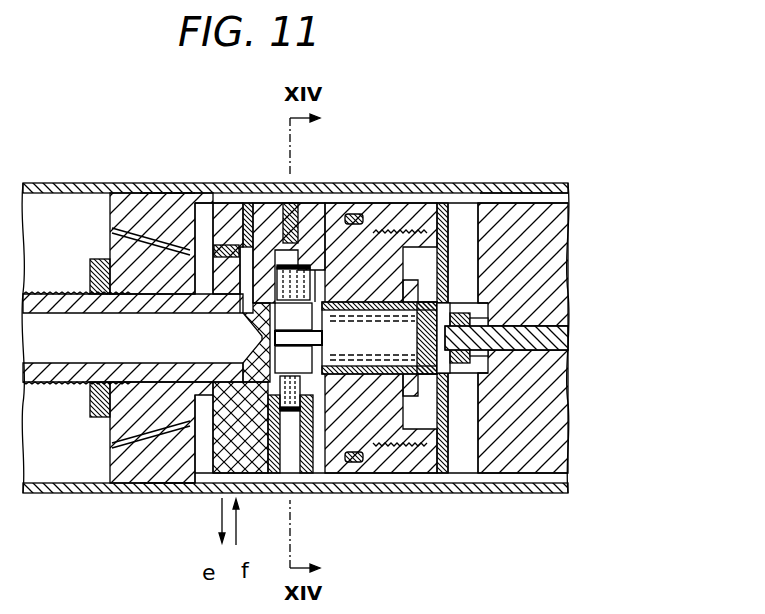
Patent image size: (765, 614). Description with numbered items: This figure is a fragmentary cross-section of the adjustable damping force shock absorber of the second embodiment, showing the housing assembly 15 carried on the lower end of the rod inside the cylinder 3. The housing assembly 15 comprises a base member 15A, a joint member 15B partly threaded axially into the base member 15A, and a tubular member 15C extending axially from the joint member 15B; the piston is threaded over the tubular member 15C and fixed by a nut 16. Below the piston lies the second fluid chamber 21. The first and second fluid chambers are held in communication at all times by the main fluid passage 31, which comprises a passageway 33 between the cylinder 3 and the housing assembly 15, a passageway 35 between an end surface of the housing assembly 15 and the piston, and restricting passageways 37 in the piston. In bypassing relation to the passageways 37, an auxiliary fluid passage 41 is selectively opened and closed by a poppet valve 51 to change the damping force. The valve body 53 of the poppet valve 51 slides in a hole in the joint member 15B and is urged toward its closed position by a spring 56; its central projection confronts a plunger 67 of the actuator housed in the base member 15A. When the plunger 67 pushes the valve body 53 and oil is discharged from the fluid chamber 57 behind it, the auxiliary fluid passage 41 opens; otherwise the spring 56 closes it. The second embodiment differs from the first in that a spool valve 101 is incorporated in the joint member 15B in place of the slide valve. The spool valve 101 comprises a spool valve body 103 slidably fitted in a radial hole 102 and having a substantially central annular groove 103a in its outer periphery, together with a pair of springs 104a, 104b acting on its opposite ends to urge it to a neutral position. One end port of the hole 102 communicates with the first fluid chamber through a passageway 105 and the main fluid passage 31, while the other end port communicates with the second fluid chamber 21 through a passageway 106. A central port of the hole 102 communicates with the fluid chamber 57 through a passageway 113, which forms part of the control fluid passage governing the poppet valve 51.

The cylinder 3 is at (494, 203).
The housing assembly 15 is at (560, 218).
The base member 15A is at (560, 254).
The joint member 15B is at (345, 245).
The tubular member 15C is at (148, 215).
The nut 16 is at (100, 417).
The second fluid chamber 21 is at (62, 205).
The main fluid passage 31 is at (424, 265).
The passageway 33 is at (392, 215).
The passageway 35 is at (202, 260).
The passageways 37 is at (128, 230).
The auxiliary fluid passage 41 is at (462, 210).
The poppet valve 51 is at (455, 470).
The valve body 53 is at (440, 460).
The spring 56 is at (402, 450).
The fluid chamber 57 is at (388, 380).
The plunger 67 is at (515, 470).
The spool valve 101 is at (140, 420).
The hole 102 is at (225, 440).
The spool valve body 103 is at (306, 470).
The annular groove 103a is at (250, 390).
The spring 104a is at (290, 475).
The spring 104b is at (285, 225).
The passageway 105 is at (287, 412).
The passageway 106 is at (222, 225).
The passageway 113 is at (312, 235).